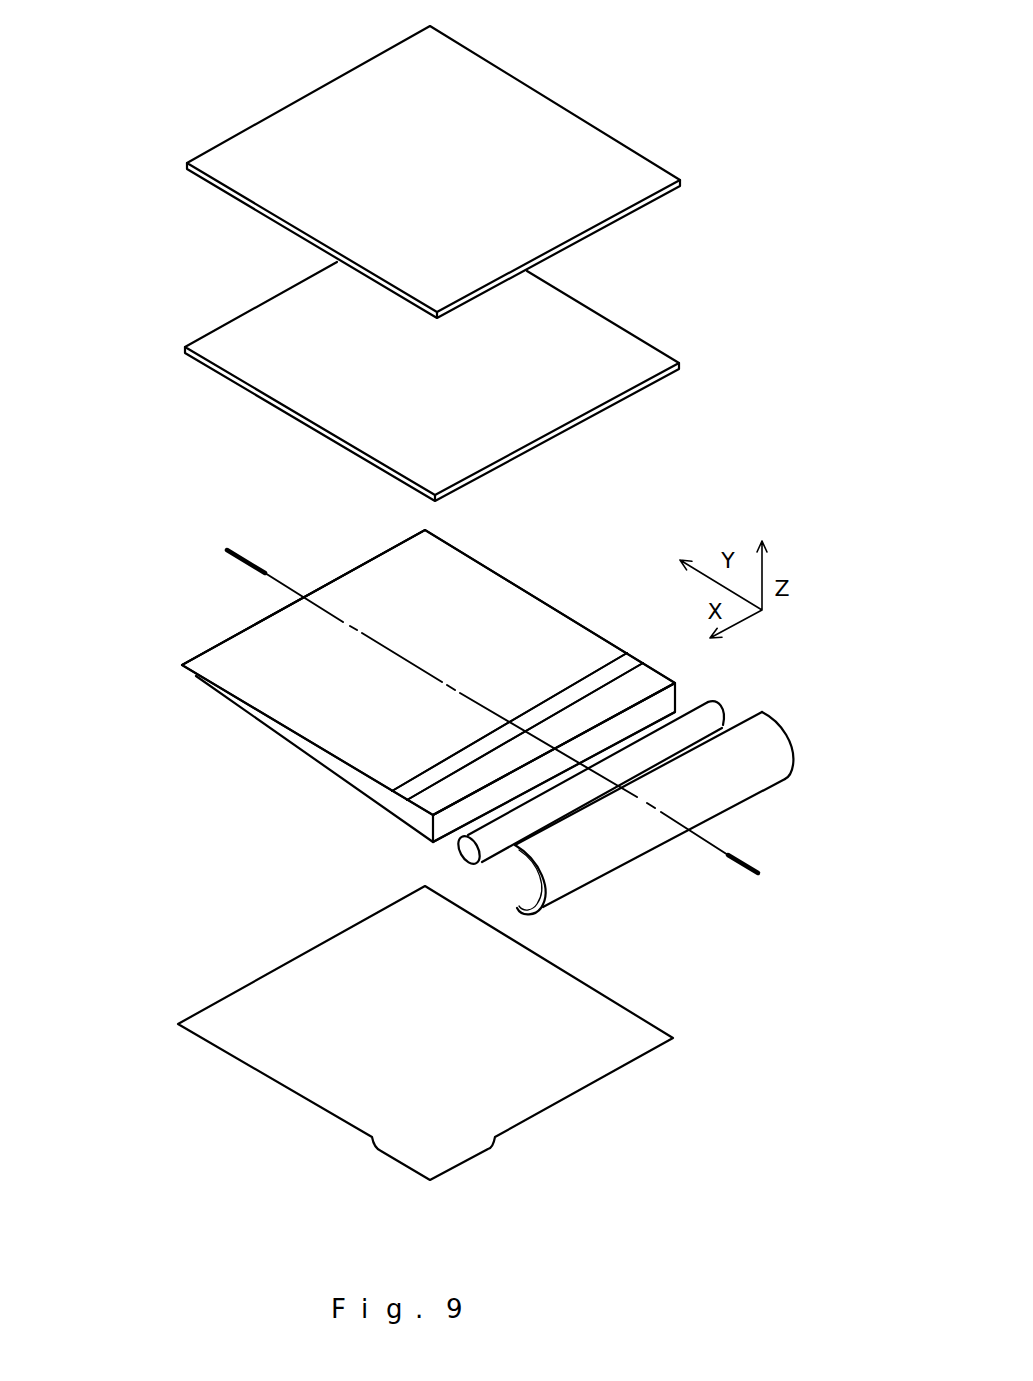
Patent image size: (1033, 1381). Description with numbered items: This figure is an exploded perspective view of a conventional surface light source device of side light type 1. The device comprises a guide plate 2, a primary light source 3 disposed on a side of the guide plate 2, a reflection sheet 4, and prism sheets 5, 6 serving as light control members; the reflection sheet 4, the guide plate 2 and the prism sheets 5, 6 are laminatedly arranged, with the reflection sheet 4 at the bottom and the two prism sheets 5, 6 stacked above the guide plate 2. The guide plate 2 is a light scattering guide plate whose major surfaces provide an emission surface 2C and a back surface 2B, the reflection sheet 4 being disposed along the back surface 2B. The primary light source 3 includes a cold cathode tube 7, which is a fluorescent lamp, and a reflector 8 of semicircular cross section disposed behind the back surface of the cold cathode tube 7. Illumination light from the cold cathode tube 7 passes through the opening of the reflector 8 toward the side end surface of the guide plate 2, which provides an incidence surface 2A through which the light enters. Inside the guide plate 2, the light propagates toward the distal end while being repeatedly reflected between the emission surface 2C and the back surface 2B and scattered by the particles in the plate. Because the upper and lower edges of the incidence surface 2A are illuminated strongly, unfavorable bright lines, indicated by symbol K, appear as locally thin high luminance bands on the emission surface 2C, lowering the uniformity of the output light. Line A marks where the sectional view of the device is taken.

The surface light source device of side light type 1 is at (213, 1169).
The guide plate 2 is at (223, 665).
The incidence surface 2A is at (608, 727).
The back surface 2B is at (265, 764).
The emission surface 2C is at (262, 647).
The primary light source 3 is at (772, 672).
The reflection sheet 4 is at (473, 1148).
The prism sheet 5 is at (553, 420).
The prism sheet 6 is at (553, 237).
The cold cathode tube 7 is at (462, 848).
The reflector 8 is at (653, 835).
The line A— A is at (316, 520).
The bright line K is at (438, 758).